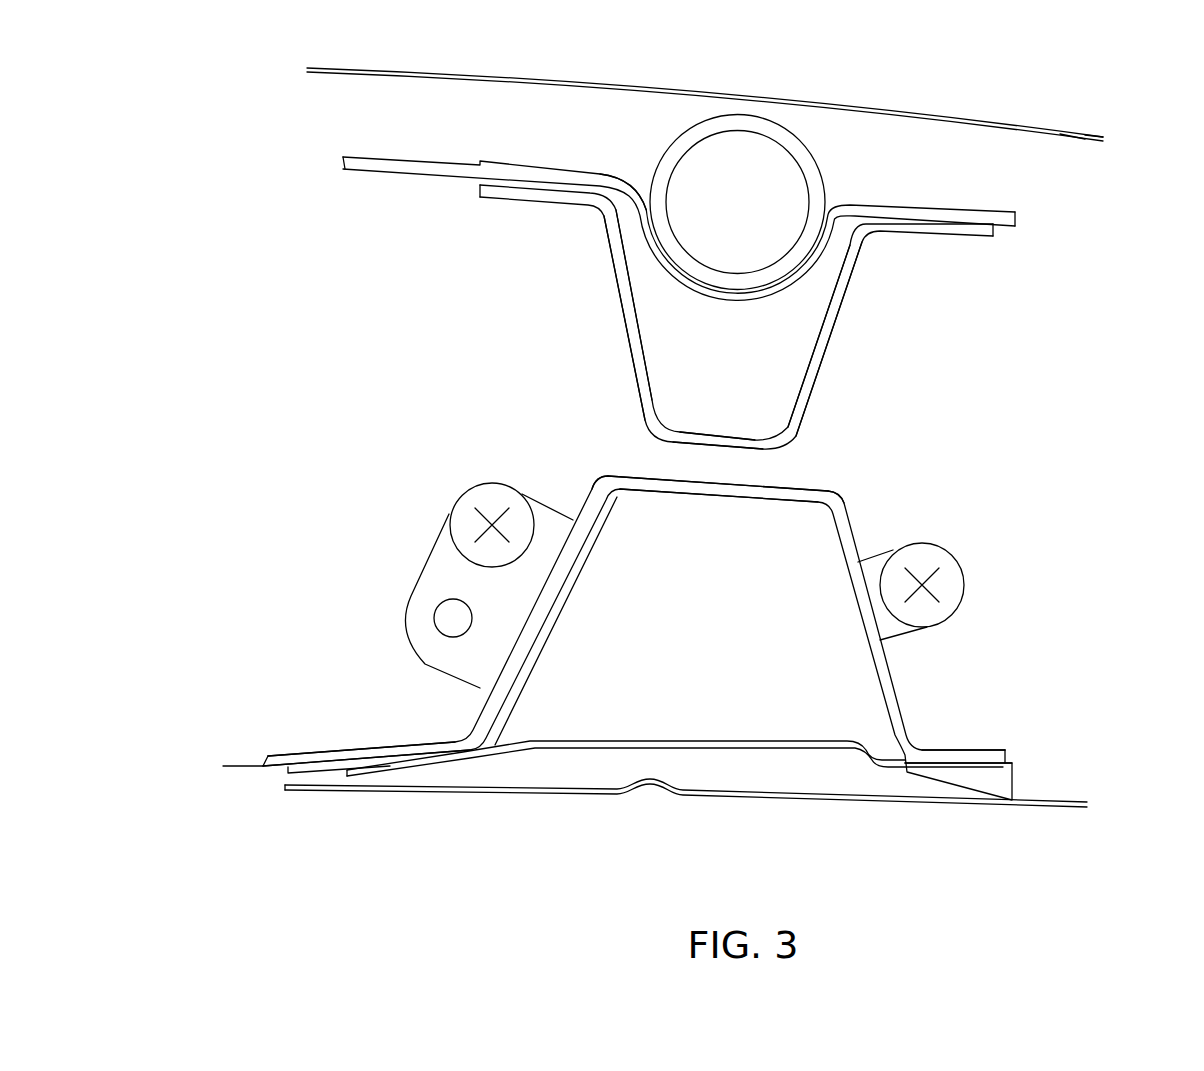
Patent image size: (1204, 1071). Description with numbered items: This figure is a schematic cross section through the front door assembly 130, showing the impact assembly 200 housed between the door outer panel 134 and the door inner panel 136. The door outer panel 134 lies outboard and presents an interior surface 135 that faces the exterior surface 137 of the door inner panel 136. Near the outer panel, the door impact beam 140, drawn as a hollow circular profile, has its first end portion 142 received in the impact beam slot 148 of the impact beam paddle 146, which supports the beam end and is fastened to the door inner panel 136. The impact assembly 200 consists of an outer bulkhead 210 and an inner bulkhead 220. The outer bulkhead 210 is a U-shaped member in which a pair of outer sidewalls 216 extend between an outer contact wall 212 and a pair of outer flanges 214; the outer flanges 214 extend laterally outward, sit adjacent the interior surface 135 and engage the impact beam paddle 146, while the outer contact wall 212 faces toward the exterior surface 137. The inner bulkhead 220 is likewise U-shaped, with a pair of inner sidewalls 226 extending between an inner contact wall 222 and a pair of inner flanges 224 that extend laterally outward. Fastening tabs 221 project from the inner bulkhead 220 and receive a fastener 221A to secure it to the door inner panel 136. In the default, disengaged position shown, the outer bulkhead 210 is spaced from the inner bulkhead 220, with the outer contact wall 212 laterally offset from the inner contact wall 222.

The impact assembly 200 is at (193, 102).
The front door assembly 130 is at (705, 89).
The door outer panel 134 is at (1140, 100).
The interior surface 135 is at (1079, 141).
The door inner panel 136 is at (711, 824).
The exterior surface 137 is at (1045, 801).
The door impact beam 140 is at (737, 161).
The first end portion 142 is at (818, 168).
The impact beam paddle 146 is at (343, 172).
The impact beam slot 148 is at (611, 162).
The outer bulkhead 210 is at (724, 317).
The outer contact wall 212 is at (717, 436).
The outer flanges 214 is at (490, 200).
The outer sidewalls 216 is at (631, 356).
The inner bulkhead 220 is at (627, 617).
The fastening tabs 221 is at (425, 555).
The fastener 221A is at (950, 556).
The inner contact wall 222 is at (735, 498).
The inner flanges 224 is at (330, 751).
The inner sidewalls 226 is at (597, 477).